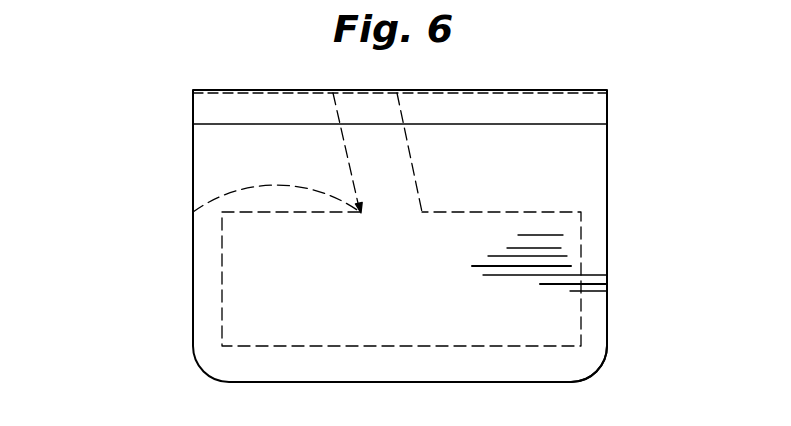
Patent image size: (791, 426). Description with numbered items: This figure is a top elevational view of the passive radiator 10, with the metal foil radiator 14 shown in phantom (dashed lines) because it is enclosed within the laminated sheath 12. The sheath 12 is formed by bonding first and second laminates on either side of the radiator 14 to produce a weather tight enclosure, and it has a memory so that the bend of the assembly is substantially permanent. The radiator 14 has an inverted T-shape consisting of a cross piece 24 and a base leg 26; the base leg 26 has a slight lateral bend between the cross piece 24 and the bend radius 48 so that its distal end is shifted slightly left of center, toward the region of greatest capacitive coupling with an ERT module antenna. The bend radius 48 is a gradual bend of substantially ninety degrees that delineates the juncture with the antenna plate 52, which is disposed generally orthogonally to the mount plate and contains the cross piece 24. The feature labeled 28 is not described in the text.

The passive radiator 10 is at (160, 74).
The laminated sheath 12 is at (193, 192).
The metal foil radiator 14 is at (220, 280).
The cross piece 24 is at (580, 239).
The base leg 26 is at (342, 140).
The arcuate recess 28 is at (193, 213).
The bend radius 48 is at (193, 116).
The antenna plate 52 is at (595, 317).